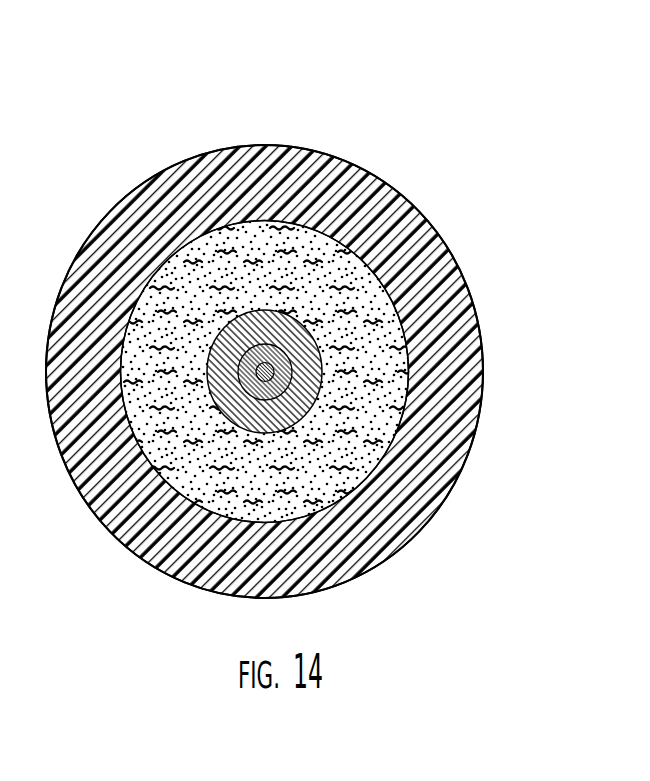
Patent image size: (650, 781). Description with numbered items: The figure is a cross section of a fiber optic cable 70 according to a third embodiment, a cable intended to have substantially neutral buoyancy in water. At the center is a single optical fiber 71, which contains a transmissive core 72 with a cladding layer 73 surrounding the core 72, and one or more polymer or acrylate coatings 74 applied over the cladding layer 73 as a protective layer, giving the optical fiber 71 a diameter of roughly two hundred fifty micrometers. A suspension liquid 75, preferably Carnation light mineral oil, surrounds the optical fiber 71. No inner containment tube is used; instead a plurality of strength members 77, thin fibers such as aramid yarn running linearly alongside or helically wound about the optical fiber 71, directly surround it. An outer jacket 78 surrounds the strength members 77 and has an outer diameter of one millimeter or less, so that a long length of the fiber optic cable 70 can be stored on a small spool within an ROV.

The fiber optic cable 70 is at (398, 55).
The single optical fiber 71 is at (317, 332).
The transmissive core 72 is at (278, 392).
The cladding layer 73 is at (272, 395).
The coatings 74 is at (283, 373).
The suspension liquid 75 is at (370, 188).
The strength members 77 is at (395, 240).
The outer jacket 78 is at (353, 163).